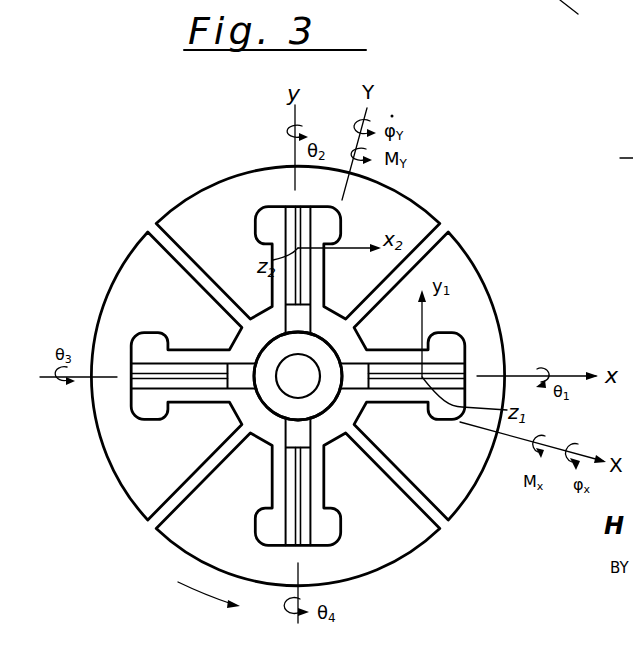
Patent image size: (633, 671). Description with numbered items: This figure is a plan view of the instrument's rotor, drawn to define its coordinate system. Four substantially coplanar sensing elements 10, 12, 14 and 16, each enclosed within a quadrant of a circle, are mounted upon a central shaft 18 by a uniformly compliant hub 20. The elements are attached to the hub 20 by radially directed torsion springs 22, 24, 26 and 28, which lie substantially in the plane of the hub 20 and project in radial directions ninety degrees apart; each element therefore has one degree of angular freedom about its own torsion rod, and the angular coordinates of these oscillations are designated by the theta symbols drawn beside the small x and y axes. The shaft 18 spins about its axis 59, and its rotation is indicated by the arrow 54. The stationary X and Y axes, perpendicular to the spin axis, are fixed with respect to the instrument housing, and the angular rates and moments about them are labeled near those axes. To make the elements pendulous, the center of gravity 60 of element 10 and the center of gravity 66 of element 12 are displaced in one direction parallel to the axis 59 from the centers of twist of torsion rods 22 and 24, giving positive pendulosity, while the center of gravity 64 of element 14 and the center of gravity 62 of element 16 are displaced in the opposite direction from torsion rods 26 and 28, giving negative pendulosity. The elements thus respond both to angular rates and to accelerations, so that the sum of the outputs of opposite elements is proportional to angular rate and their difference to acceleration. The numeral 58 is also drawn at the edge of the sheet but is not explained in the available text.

The sensing element 10 is at (456, 497).
The sensing element 12 is at (197, 196).
The sensing element 14 is at (107, 296).
The sensing element 16 is at (268, 572).
The shaft 18 is at (305, 388).
The hub 20 is at (284, 404).
The torsion spring 22 is at (394, 366).
The torsion spring 24 is at (298, 284).
The torsion spring 26 is at (194, 366).
The torsion spring 28 is at (297, 478).
The arrow 54 is at (210, 598).
The adjacent figure element 58 is at (578, 14).
The axis 59 is at (300, 373).
The center of gravity 60 is at (422, 378).
The center of gravity 62 is at (298, 503).
The center of gravity 64 is at (172, 378).
The center of gravity 66 is at (298, 248).